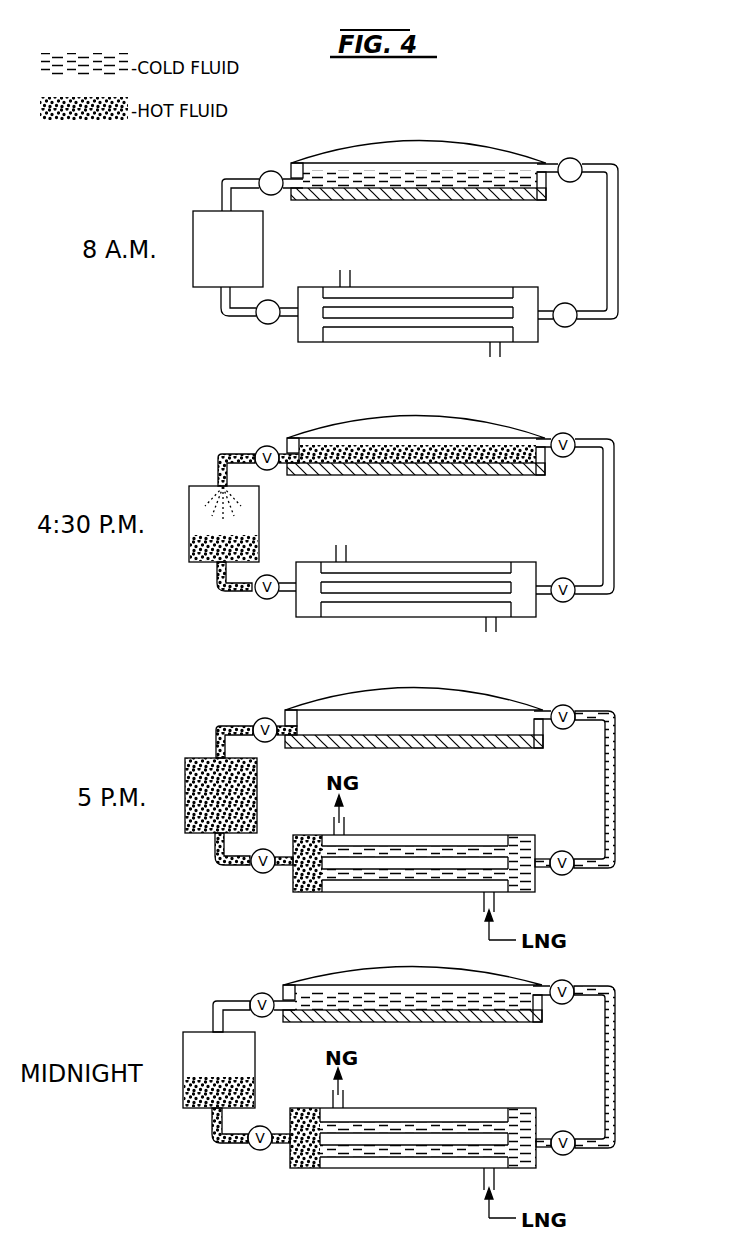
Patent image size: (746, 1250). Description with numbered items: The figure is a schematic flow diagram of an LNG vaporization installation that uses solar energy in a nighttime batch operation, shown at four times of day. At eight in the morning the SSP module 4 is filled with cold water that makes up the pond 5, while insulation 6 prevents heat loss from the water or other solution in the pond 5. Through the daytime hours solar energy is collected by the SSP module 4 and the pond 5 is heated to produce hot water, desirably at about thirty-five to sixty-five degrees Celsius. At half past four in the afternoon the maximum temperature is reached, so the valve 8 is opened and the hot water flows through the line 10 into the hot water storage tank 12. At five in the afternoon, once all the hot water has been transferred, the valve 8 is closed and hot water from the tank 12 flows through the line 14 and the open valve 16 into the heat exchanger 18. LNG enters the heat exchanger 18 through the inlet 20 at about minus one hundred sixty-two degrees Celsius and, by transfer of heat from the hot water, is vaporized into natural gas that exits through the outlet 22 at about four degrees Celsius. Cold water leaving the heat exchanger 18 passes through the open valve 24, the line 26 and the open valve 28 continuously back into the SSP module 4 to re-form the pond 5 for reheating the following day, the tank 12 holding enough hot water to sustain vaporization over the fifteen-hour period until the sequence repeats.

The SSP module 4 is at (448, 145).
The pond 5 is at (373, 168).
The insulation 6 is at (457, 201).
The valve 8 is at (270, 171).
The line 10 is at (222, 193).
The hot water storage tank 12 is at (193, 262).
The line 14 is at (221, 304).
The valve 16 is at (260, 324).
The heat exchanger 18 is at (330, 342).
The inlet 20 is at (488, 351).
The outlet 22 is at (352, 278).
The valve 24 is at (572, 326).
The line 26 is at (618, 245).
The valve 28 is at (576, 158).